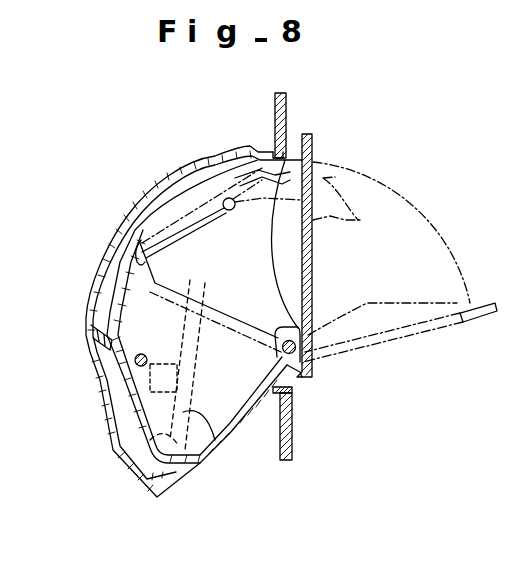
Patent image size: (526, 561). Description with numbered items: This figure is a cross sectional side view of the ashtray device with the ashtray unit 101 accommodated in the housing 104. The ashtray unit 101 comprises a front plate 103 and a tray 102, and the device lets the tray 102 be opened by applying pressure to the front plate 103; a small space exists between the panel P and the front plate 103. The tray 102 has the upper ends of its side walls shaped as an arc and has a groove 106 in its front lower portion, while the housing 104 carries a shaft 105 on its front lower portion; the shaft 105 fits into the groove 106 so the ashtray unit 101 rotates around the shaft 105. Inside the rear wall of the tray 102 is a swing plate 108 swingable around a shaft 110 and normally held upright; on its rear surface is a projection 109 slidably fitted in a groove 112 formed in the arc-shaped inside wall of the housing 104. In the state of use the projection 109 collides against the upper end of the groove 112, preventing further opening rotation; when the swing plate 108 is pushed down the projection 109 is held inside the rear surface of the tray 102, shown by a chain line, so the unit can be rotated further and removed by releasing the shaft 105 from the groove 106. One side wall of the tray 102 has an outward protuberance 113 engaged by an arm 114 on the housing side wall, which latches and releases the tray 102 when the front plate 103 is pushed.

The ashtray unit 101 is at (319, 269).
The tray 102 is at (241, 257).
The front plate 103 is at (312, 148).
The housing 104 is at (172, 170).
The shaft 105 is at (282, 333).
The groove 106 is at (293, 363).
The swing plate 108 is at (113, 264).
The projection 109 is at (97, 344).
The shaft 110 is at (148, 359).
The groove 112 is at (133, 216).
The protuberance 113 is at (150, 386).
The arm 114 is at (222, 438).
The panel P is at (292, 458).